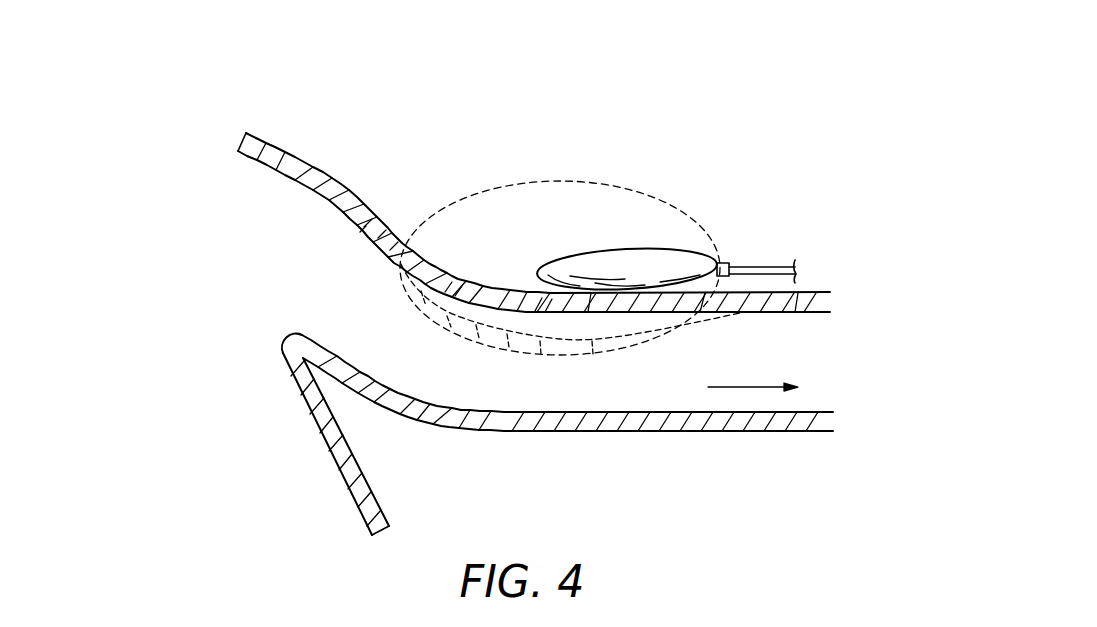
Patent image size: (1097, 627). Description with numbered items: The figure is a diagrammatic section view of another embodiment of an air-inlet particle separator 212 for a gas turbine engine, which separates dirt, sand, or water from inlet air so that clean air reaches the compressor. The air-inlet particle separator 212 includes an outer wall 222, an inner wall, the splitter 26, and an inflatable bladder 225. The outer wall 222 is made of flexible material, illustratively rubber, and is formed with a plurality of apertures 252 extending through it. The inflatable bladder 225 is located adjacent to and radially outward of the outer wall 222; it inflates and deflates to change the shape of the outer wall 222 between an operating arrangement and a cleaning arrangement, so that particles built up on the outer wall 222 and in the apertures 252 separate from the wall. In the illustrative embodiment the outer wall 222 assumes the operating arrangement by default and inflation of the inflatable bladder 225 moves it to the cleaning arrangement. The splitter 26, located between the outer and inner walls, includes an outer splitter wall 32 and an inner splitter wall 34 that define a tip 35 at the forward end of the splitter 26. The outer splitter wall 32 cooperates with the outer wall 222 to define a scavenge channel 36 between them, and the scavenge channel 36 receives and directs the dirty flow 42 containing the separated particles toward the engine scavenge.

The air-inlet particle separator 212 is at (182, 154).
The outer wall 222 is at (341, 165).
The apertures 252 is at (382, 208).
The inflatable bladder 225 is at (598, 247).
The splitter 26 is at (289, 418).
The tip 35 is at (299, 334).
The outer splitter wall 32 is at (352, 365).
The inner splitter wall 34 is at (346, 499).
The scavenge channel 36 is at (628, 397).
The dirty flow 42 is at (745, 388).